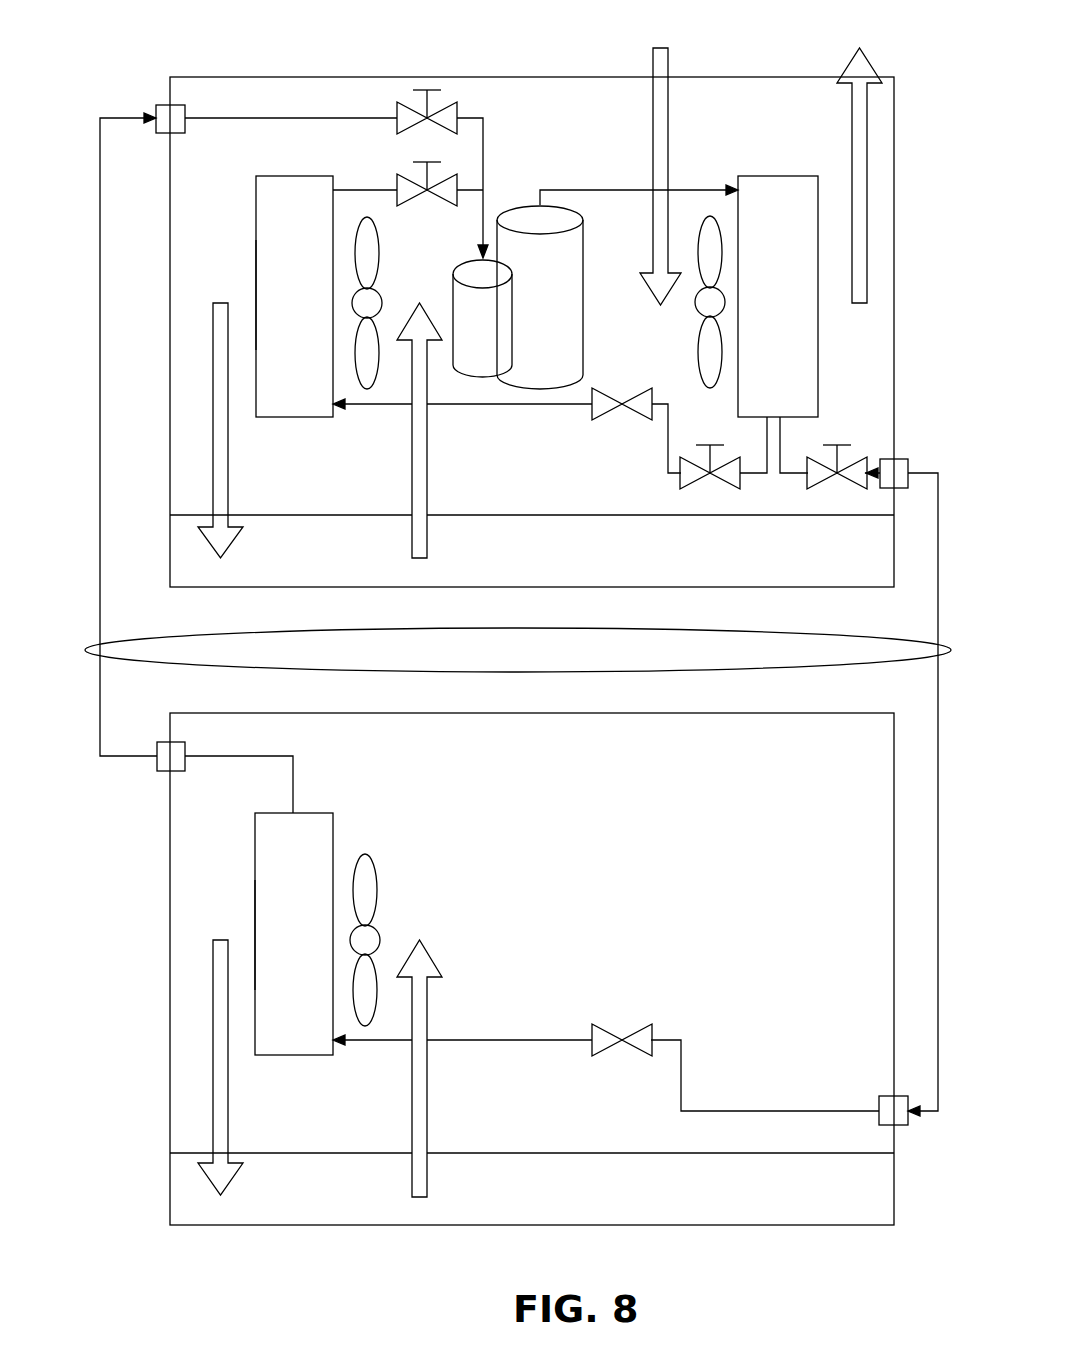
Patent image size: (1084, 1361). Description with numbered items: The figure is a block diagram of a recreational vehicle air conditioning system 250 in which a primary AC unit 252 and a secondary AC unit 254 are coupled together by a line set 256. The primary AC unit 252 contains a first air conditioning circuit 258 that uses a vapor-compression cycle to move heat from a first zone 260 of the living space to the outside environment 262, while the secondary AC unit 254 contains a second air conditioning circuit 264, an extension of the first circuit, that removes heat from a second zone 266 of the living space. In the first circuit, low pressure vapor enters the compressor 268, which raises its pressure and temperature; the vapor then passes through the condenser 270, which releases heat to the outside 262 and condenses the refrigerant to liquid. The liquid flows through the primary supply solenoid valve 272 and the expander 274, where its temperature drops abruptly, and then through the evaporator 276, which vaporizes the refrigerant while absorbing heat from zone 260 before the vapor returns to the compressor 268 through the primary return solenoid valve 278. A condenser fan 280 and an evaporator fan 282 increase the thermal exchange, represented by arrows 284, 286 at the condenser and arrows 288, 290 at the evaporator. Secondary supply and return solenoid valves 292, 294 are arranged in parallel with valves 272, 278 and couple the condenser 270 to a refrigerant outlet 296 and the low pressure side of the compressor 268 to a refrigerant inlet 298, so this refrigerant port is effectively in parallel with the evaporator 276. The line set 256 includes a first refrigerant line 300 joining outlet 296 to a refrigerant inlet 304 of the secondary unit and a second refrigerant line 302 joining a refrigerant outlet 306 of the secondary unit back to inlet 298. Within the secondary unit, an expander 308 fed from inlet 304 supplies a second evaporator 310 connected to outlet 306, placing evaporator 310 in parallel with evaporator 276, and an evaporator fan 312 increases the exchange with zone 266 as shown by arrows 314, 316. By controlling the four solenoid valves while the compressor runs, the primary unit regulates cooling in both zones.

The recreational vehicle air conditioning system 250 is at (138, 44).
The primary AC unit 252 is at (166, 196).
The secondary AC unit 254 is at (166, 834).
The line set 256 is at (327, 643).
The first air conditioning circuit 258 is at (240, 188).
The first zone of living space 260 is at (590, 553).
The outside environment 262 is at (420, 42).
The second air conditioning circuit 264 is at (460, 840).
The second zone of living space 266 is at (591, 1190).
The compressor 268 is at (583, 260).
The condenser 270 is at (808, 390).
The primary supply solenoid valve 272 is at (681, 484).
The expander 274 is at (662, 400).
The evaporator 276 is at (258, 290).
The primary return solenoid valve 278 is at (413, 163).
The condenser fan 280 is at (707, 368).
The evaporator fan 282 is at (370, 262).
The arrow 284 is at (652, 148).
The arrow 286 is at (851, 148).
The arrow 288 is at (412, 447).
The arrow 290 is at (213, 418).
The secondary supply solenoid valve 292 is at (830, 447).
The secondary return solenoid valve 294 is at (397, 112).
The refrigerant outlet 296 is at (908, 466).
The refrigerant inlet 298 is at (150, 115).
The first refrigerant line 300 is at (937, 730).
The second refrigerant line 302 is at (100, 462).
The refrigerant inlet 304 is at (879, 1105).
The refrigerant outlet 306 is at (160, 750).
The expander 308 is at (605, 1027).
The second evaporator 310 is at (258, 927).
The evaporator fan 312 is at (370, 898).
The arrow 314 is at (412, 1079).
The arrow 316 is at (213, 1055).